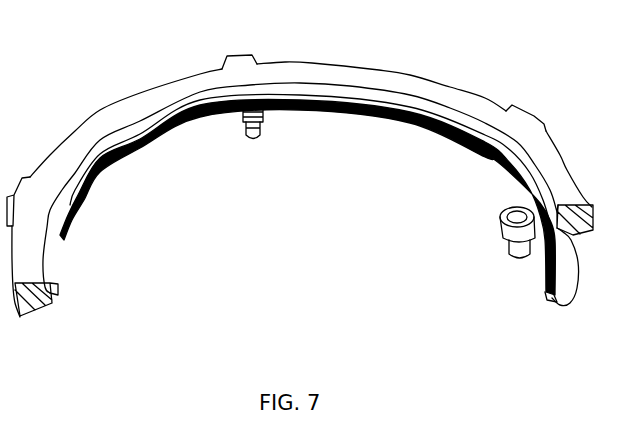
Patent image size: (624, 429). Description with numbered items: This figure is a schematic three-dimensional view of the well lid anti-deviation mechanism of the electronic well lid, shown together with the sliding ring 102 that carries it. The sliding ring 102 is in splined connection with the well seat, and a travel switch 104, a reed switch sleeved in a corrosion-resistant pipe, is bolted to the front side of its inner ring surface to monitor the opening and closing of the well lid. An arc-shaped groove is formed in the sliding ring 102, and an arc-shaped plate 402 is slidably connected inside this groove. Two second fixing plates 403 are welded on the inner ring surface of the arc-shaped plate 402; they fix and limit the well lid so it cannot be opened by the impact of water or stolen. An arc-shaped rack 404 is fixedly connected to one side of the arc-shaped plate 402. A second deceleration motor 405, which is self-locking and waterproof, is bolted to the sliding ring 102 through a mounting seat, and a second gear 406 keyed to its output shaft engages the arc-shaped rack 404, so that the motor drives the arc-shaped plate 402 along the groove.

The sliding ring 102 is at (132, 109).
The travel switch 104 is at (247, 107).
The arc-shaped plate 402 is at (555, 298).
The second fixing plate 403 is at (486, 156).
The arc-shaped rack 404 is at (547, 288).
The second deceleration motor 405 is at (509, 247).
The second gear 406 is at (503, 221).